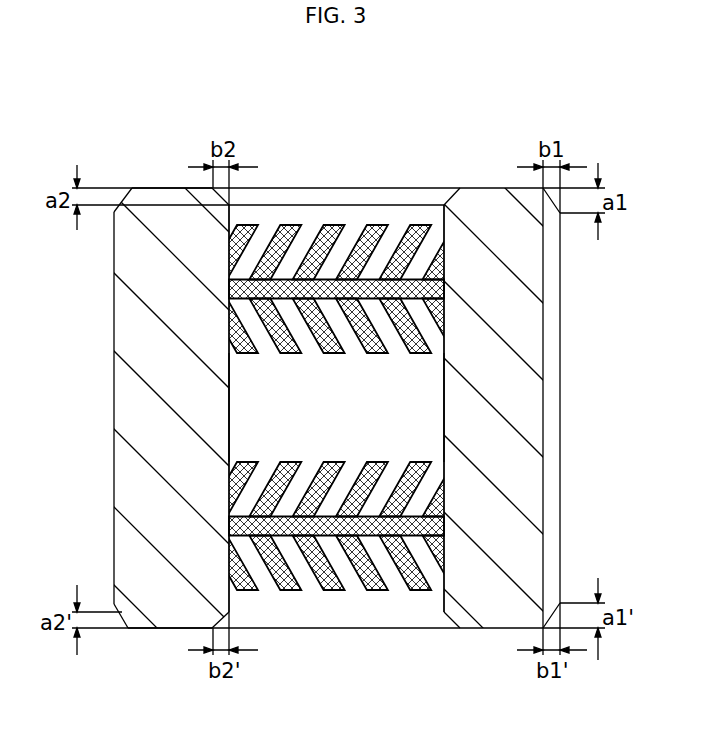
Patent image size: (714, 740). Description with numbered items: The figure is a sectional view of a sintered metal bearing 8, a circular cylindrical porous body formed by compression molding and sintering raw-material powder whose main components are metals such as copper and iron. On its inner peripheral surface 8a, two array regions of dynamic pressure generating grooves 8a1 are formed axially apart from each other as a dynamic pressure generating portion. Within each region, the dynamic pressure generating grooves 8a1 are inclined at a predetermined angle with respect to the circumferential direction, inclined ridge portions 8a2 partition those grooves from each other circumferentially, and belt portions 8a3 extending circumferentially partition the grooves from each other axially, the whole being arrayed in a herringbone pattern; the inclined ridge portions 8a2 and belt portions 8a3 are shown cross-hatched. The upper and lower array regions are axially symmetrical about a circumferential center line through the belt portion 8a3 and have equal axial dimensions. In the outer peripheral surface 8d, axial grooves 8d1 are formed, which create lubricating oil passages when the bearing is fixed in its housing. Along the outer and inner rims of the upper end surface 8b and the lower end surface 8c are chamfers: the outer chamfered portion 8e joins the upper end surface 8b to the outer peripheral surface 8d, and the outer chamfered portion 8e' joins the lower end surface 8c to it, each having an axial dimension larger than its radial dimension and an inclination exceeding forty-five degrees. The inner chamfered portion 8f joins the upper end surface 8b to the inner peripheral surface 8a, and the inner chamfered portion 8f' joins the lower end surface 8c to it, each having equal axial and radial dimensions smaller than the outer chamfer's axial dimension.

The sintered metal bearing 8 is at (263, 148).
The inner peripheral surface 8a is at (436, 415).
The dynamic pressure generating grooves 8a1 is at (343, 247).
The inclined ridge portions 8a2 is at (312, 248).
The belt portions 8a3 is at (362, 290).
The upper end surface 8b is at (160, 188).
The lower end surface 8c is at (167, 628).
The outer peripheral surface 8d is at (114, 400).
The axial grooves 8d1 is at (543, 437).
The outer chamfered portion 8e is at (116, 175).
The outer chamfered portion 8e' is at (116, 643).
The inner chamfered portion 8f is at (456, 171).
The inner chamfered portion 8f' is at (446, 652).